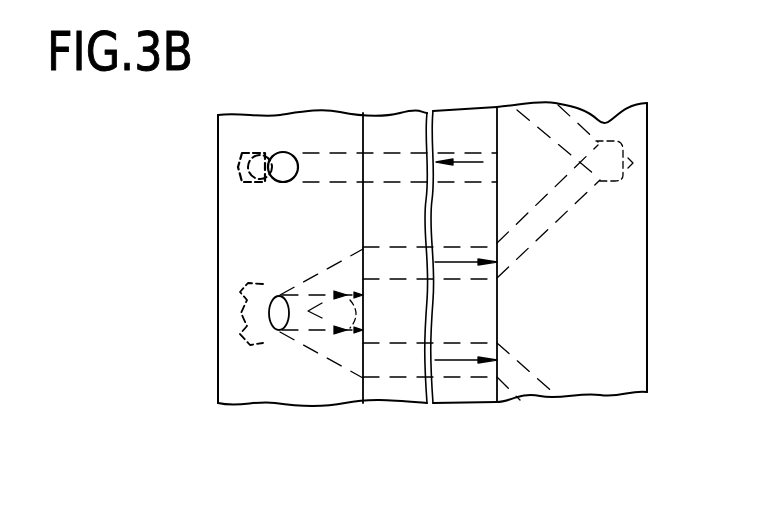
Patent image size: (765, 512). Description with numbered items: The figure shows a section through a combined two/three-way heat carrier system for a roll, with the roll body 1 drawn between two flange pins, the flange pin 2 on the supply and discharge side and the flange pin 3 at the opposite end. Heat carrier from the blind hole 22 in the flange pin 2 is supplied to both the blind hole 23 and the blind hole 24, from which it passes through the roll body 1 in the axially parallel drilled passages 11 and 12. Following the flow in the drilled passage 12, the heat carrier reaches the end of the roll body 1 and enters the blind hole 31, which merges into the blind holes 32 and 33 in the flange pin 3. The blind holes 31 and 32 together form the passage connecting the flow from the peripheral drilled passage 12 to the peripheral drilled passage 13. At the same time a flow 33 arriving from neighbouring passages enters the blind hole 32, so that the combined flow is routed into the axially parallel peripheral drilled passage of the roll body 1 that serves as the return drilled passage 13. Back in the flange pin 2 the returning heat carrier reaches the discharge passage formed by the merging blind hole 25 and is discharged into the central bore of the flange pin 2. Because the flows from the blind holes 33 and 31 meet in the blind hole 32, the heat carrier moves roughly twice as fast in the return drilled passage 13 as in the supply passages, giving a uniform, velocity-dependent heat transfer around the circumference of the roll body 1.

The roll body 1 is at (405, 388).
The flange pin 2 is at (226, 378).
The flange pin 3 is at (628, 363).
The axially parallel drilled passage 11 is at (467, 368).
The drilled passage 12 is at (463, 247).
The return drilled passage 13 is at (463, 153).
The blind hole 22 is at (343, 323).
The blind hole 23 is at (308, 343).
The blind hole 24 is at (320, 273).
The blind hole 25 is at (330, 160).
The blind hole 31 is at (548, 231).
The blind hole 32 is at (517, 152).
The blind hole 33 is at (620, 122).